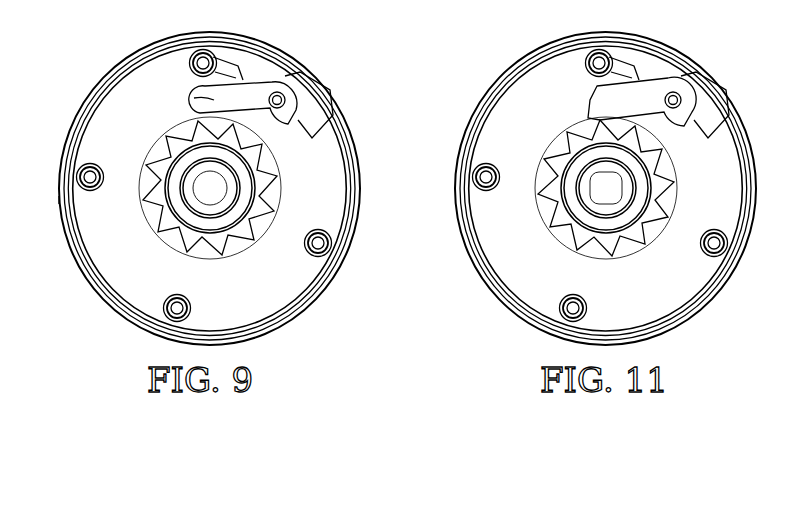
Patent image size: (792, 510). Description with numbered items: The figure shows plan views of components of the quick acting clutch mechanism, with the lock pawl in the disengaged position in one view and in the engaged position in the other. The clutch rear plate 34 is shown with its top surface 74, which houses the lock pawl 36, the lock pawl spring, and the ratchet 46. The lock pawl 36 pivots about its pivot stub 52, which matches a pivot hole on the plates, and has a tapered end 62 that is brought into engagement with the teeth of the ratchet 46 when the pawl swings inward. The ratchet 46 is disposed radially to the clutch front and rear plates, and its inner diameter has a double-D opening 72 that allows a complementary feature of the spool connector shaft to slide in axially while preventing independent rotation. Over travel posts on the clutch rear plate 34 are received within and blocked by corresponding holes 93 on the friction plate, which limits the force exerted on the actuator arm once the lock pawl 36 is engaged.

In FIG. 9, the clutch rear plate 34 is at (347, 253).
In FIG. 11, the clutch rear plate 34 is at (745, 253).
In FIG. 9, the lock pawl 36 is at (246, 92).
In FIG. 11, the lock pawl 36 is at (642, 92).
In FIG. 9, the ratchet 46 is at (253, 228).
In FIG. 11, the ratchet 46 is at (647, 227).
In FIG. 9, the pivot stub 52 is at (283, 100).
In FIG. 11, the pivot stub 52 is at (673, 100).
In FIG. 9, the tapered end 62 is at (212, 100).
In FIG. 9, the double-D opening 72 is at (205, 178).
In FIG. 11, the double-D opening 72 is at (606, 188).
In FIG. 9, the top surface 74 is at (153, 273).
In FIG. 11, the top surface 74 is at (549, 273).
In FIG. 9, the holes 93 is at (29, 196).